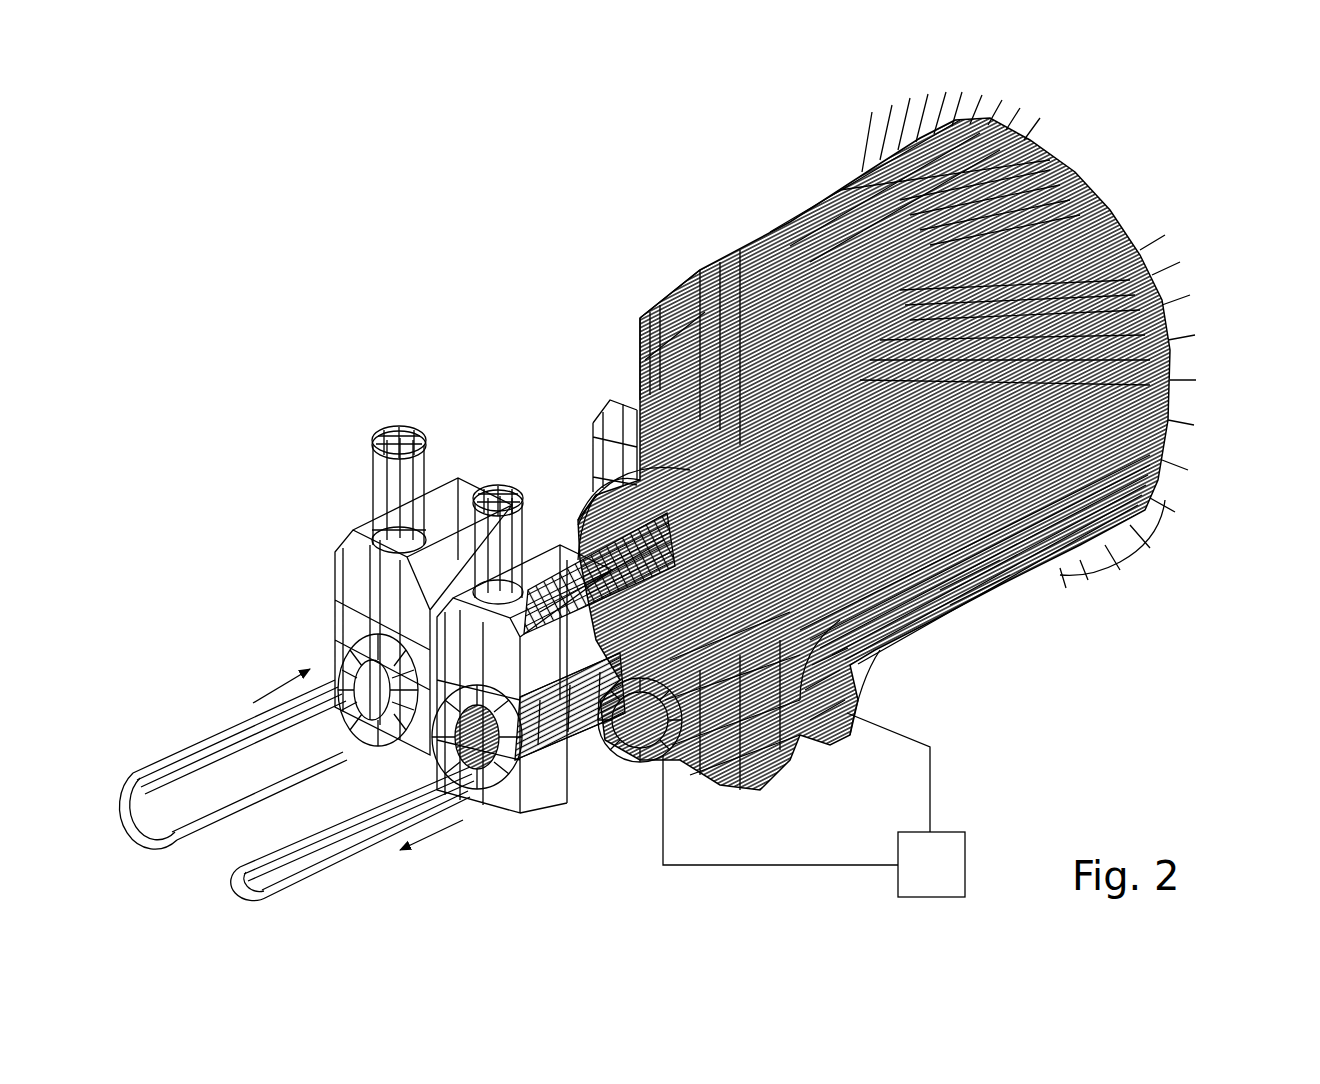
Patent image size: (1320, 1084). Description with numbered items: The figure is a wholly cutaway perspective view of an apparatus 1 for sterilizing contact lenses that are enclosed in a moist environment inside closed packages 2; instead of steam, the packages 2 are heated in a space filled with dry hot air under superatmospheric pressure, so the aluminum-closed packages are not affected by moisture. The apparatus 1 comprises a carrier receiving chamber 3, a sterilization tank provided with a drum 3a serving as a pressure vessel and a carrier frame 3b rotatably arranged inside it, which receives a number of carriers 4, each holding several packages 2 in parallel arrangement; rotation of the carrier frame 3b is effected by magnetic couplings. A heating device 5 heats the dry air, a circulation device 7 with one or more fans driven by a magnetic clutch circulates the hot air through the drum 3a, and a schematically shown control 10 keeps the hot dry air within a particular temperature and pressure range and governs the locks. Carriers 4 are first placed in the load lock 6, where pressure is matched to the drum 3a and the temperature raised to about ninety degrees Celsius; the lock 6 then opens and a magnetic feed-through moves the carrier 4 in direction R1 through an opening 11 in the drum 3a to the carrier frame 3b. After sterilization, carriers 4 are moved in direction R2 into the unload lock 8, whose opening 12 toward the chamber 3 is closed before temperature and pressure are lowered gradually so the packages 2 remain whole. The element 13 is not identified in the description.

The apparatus 1 is at (590, 284).
The package 2 is at (1120, 298).
The carrier receiving chamber 3 is at (724, 232).
The drum 3a is at (773, 214).
The carrier frame 3b is at (1052, 192).
The carrier 4 is at (1140, 388).
The heating device 5 is at (748, 786).
The load lock 6 is at (578, 548).
The circulation device 7 is at (847, 684).
The unload lock 8 is at (622, 737).
The control 10 is at (946, 877).
The opening 11 is at (590, 462).
The opening 12 is at (950, 631).
The conveyor troughs 13 is at (228, 750).
The direction R1 is at (277, 683).
The direction R2 is at (433, 840).